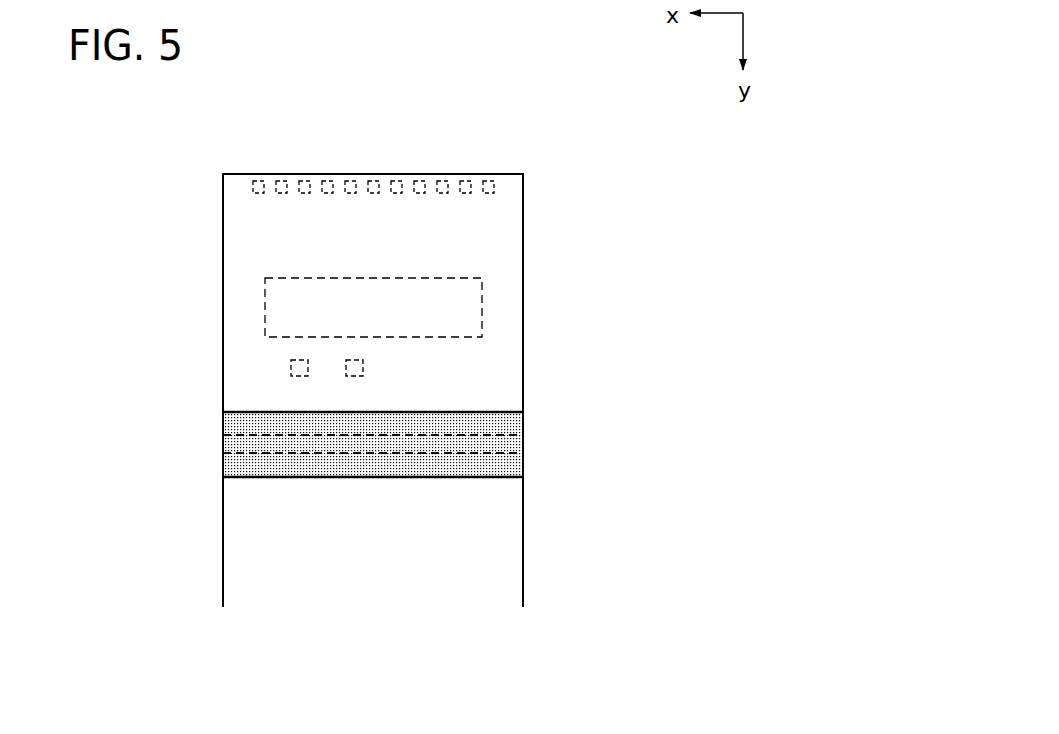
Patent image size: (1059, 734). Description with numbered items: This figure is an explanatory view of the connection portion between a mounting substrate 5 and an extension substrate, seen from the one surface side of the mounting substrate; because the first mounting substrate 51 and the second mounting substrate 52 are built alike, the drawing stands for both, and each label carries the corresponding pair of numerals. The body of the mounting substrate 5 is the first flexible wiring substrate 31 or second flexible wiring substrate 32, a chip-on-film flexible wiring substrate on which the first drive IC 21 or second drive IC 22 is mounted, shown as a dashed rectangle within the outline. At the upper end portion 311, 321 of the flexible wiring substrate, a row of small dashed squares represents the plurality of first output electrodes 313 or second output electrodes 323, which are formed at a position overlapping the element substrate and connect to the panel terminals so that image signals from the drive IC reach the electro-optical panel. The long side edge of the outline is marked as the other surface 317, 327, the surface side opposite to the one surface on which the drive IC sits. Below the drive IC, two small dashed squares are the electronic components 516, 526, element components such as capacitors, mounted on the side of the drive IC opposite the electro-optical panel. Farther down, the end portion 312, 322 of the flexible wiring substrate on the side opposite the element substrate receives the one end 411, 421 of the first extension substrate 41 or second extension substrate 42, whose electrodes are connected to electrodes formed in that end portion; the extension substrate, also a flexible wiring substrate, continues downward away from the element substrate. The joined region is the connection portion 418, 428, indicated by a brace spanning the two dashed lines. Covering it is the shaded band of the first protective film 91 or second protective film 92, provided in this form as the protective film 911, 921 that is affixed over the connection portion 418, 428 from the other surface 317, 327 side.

The mounting substrate 5 is at (449, 390).
The first mounting substrate 51 is at (449, 390).
The second mounting substrate 52 is at (537, 213).
The first flexible wiring substrate 31 is at (425, 293).
The second flexible wiring substrate 32 is at (508, 245).
The end portion of the first flexible wiring substrate 311 is at (373, 122).
The end portion of the second flexible wiring substrate 321 is at (383, 172).
The end portion of the first flexible wiring substrate 312 is at (317, 554).
The end portion of the second flexible wiring substrate 322 is at (308, 453).
The first output electrodes 313 is at (373, 138).
The second output electrodes 323 is at (305, 177).
The other surface of the first flexible wiring substrate 317 is at (553, 260).
The other surface of the second flexible wiring substrate 327 is at (498, 208).
The first drive IC 21 is at (446, 307).
The second drive IC 22 is at (482, 313).
The electronic components 516 is at (234, 355).
The electronic components 526 is at (290, 366).
The first protective film 91 is at (474, 440).
The protective film 911 is at (474, 440).
The second protective film 92 is at (474, 440).
The protective film 921 is at (503, 425).
The first extension substrate 41 is at (427, 542).
The second extension substrate 42 is at (525, 528).
The one end of the first extension substrate 411 is at (315, 511).
The one end of the second extension substrate 421 is at (265, 435).
The connection portion 418 is at (290, 445).
The connection portion 428 is at (222, 432).